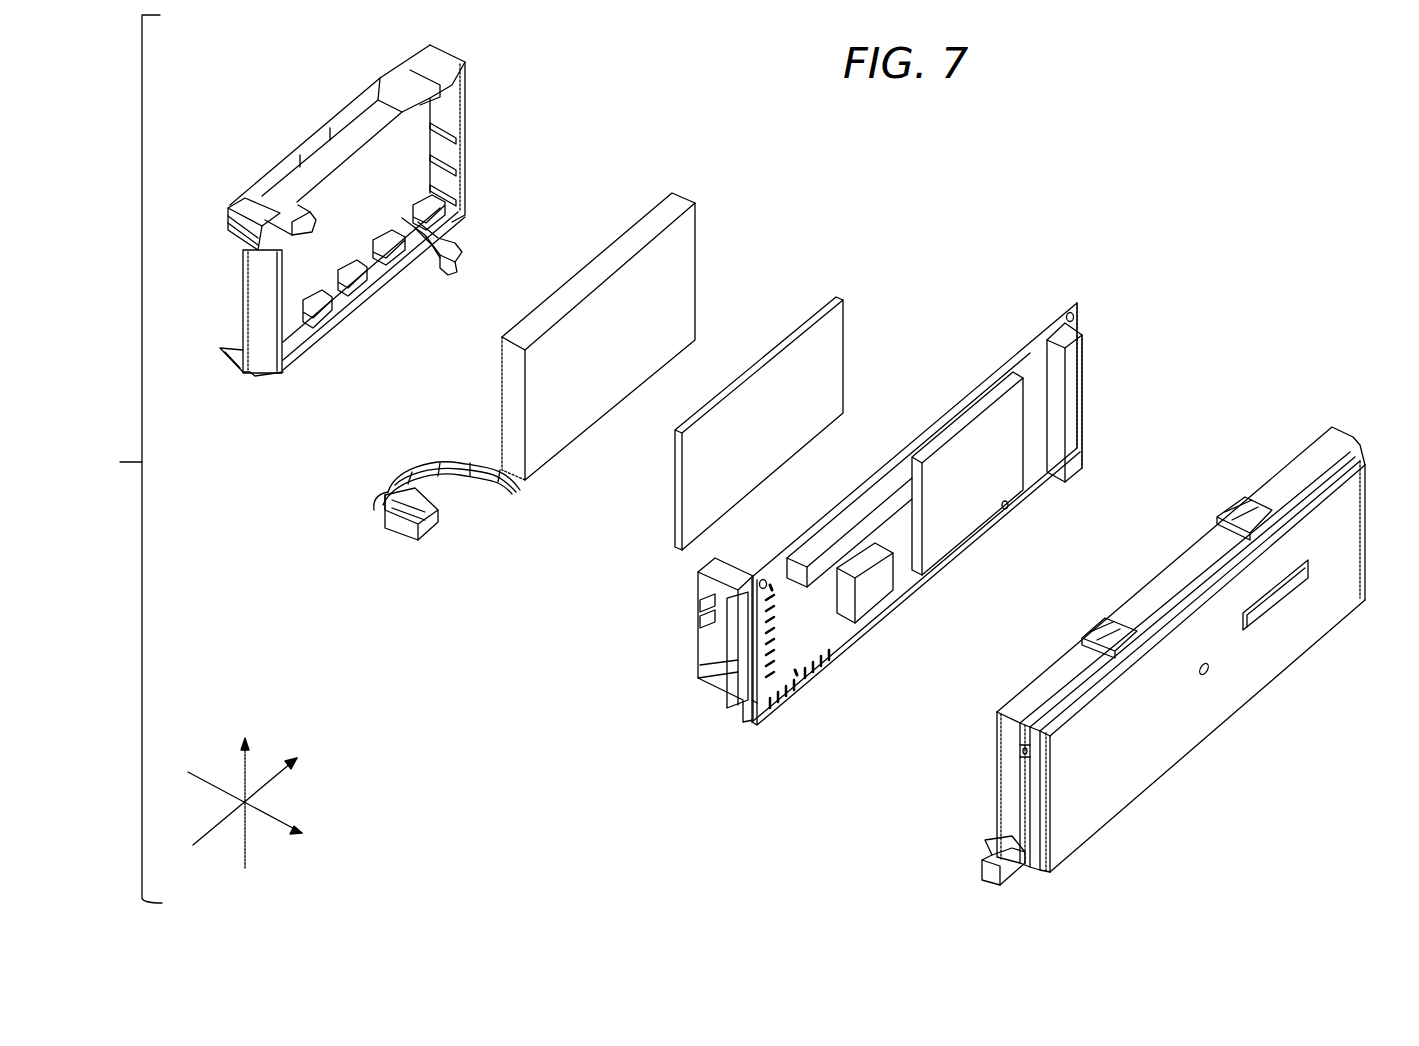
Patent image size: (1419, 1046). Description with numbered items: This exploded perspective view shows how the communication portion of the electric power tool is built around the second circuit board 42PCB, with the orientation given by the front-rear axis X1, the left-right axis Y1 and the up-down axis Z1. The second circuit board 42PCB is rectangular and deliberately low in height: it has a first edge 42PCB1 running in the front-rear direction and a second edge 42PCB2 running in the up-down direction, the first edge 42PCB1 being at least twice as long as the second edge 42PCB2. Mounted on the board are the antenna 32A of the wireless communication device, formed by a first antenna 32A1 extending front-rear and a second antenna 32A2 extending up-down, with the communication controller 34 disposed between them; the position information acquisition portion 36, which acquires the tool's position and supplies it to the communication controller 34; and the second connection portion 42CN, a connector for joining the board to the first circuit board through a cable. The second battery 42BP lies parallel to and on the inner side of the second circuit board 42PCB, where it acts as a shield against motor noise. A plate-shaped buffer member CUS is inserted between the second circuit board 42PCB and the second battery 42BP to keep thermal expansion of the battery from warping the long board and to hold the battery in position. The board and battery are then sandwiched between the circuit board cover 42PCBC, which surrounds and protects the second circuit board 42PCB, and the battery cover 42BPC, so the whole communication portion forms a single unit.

The battery cover 42BPC is at (448, 147).
The second battery 42BP is at (680, 277).
The buffer member CUS is at (838, 345).
The second circuit board 42PCB is at (1035, 363).
The first edge 42PCB1 is at (915, 432).
The second edge 42PCB2 is at (750, 645).
The antenna 32A is at (800, 431).
The first antenna 32A1 is at (817, 543).
The second antenna 32A2 is at (1217, 346).
The communication controller 34 is at (962, 485).
The position information acquisition portion 36 is at (868, 593).
The second connection portion 42CN is at (705, 590).
The circuit board cover 42PCBC is at (1355, 505).
The front side X1 is at (351, 770).
The right side Y1 is at (359, 860).
The upper side Z1 is at (276, 724).